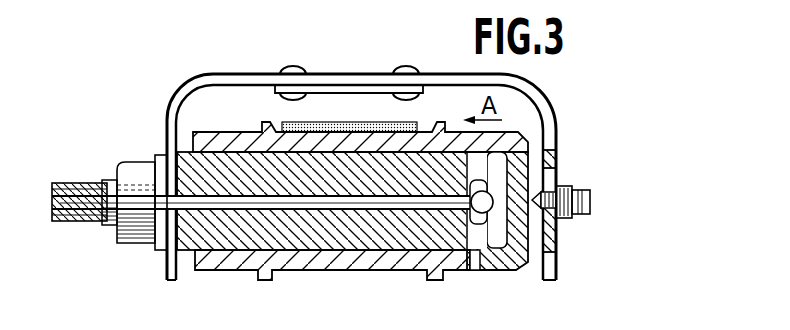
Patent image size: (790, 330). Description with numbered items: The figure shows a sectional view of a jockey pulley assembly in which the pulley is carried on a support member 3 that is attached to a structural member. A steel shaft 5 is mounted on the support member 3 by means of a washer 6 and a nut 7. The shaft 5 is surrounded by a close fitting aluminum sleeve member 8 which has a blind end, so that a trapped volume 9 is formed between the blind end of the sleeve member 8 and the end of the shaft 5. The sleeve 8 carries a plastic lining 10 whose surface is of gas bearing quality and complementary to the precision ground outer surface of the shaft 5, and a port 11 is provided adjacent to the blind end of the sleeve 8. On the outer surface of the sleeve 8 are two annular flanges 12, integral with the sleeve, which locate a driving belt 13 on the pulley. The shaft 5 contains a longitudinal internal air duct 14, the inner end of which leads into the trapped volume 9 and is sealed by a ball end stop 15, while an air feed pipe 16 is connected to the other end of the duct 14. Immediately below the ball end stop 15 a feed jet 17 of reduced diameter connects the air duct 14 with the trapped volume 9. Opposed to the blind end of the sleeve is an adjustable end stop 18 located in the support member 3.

The support member 3 is at (543, 105).
The steel shaft 5 is at (342, 228).
The washer 6 is at (158, 250).
The nut 7 is at (130, 216).
The aluminum sleeve member 8 is at (295, 256).
The trapped volume 9 is at (493, 183).
The plastic lining 10 is at (380, 254).
The port 11 is at (474, 253).
The annular flanges 12 is at (260, 127).
The driving belt 13 is at (323, 113).
The longitudinal internal air duct 14 is at (230, 200).
The ball end stop 15 is at (491, 208).
The air feed pipe 16 is at (92, 218).
The feed jet 17 is at (522, 127).
The adjustable end stop 18 is at (557, 183).